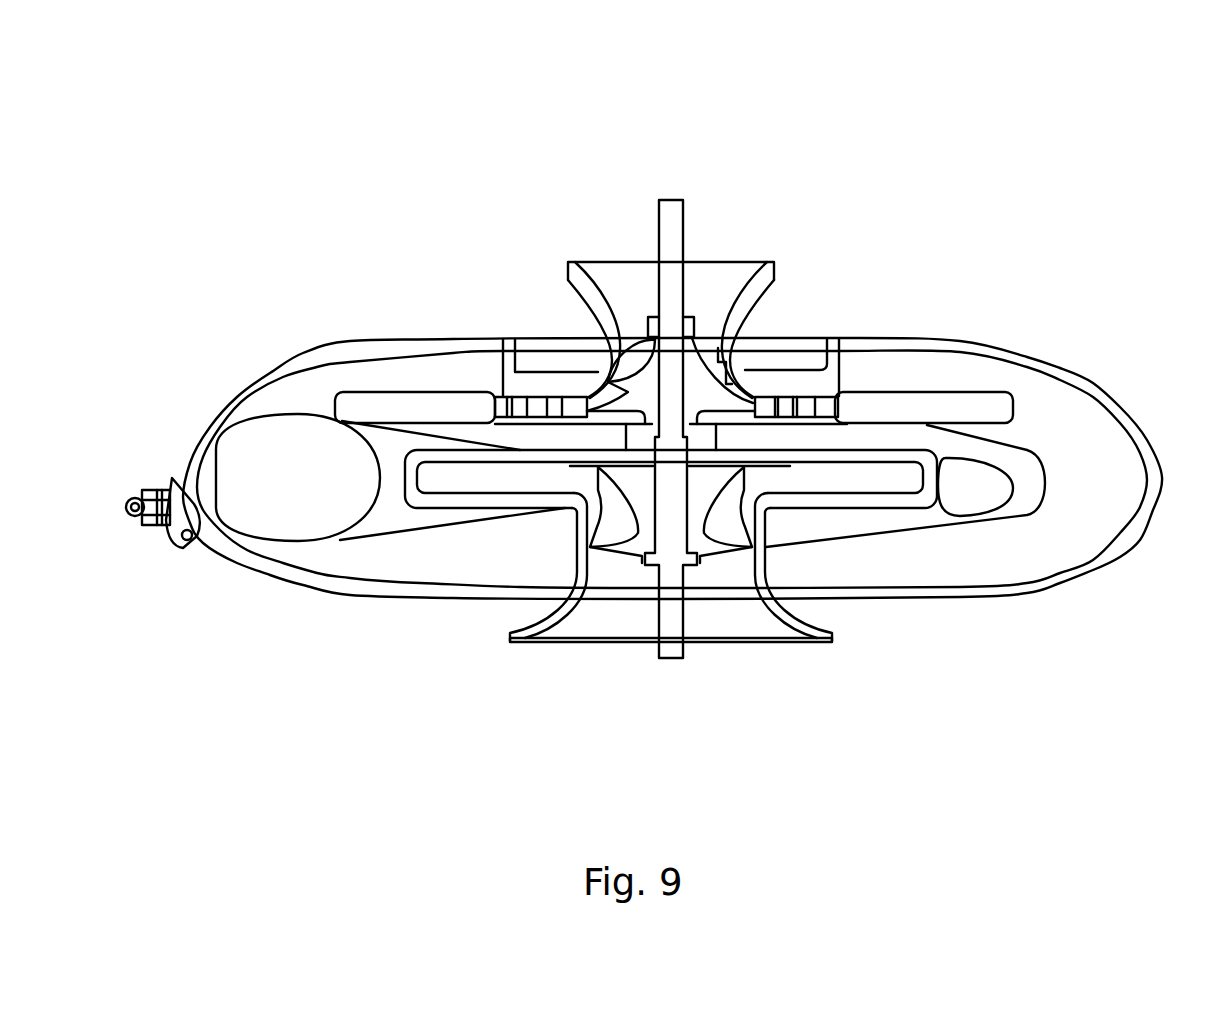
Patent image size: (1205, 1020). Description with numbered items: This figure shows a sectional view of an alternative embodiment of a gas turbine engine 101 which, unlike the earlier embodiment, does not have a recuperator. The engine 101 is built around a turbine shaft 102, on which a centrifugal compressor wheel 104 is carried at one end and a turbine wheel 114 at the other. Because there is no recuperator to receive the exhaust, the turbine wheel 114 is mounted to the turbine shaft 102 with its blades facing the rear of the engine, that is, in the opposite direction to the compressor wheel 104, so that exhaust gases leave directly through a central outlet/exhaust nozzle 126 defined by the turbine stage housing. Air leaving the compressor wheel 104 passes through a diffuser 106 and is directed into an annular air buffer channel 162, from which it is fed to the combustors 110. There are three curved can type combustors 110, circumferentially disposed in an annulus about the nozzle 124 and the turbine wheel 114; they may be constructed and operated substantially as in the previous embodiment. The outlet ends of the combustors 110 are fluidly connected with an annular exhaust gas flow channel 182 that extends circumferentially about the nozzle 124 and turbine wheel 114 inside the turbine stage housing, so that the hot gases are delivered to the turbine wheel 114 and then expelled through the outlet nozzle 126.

The gas turbine engine 101 is at (970, 207).
The turbine shaft 102 is at (668, 640).
The centrifugal compressor wheel 104 is at (690, 380).
The diffuser 106 is at (518, 407).
The combustors 110 is at (277, 520).
The turbine wheel 114 is at (637, 500).
The nozzle 124 is at (866, 478).
The central outlet/exhaust nozzle 126 is at (510, 637).
The annular air buffer channel 162 is at (977, 408).
The annular exhaust gas flow channel 182 is at (418, 468).